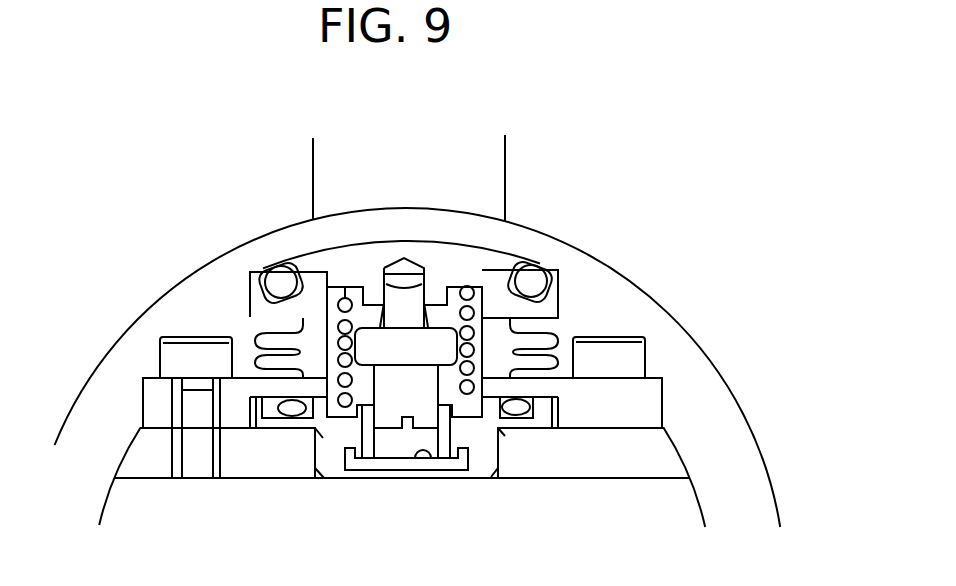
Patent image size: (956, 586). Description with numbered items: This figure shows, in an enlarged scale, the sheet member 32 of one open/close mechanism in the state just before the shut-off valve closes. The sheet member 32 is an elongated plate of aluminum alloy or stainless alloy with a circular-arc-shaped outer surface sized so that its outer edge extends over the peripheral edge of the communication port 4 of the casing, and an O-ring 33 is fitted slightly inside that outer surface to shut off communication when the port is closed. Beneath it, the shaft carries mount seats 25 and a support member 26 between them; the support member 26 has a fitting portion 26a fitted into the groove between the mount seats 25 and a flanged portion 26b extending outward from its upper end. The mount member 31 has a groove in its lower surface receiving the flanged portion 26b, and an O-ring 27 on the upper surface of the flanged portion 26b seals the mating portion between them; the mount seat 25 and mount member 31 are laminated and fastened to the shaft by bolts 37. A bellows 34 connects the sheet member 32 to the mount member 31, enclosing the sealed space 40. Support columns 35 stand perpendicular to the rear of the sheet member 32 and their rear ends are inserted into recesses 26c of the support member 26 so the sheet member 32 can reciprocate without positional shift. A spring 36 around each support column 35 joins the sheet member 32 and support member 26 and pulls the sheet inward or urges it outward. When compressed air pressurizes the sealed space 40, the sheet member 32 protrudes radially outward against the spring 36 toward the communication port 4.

The communication port 4 is at (505, 147).
The mount seat 25 is at (137, 455).
The support member 26 is at (336, 480).
The fitting portion 26a is at (503, 458).
The flanged portion 26b is at (540, 424).
The recess 26c is at (421, 449).
The O-ring 27 is at (187, 347).
The mount member 31 is at (150, 395).
The sheet member 32 is at (402, 241).
The O-ring 33 is at (272, 270).
The bellows 34 is at (558, 340).
The support column 35 is at (392, 428).
The spring 36 is at (464, 284).
The bolt 37 is at (646, 338).
The sealed space 40 is at (502, 358).